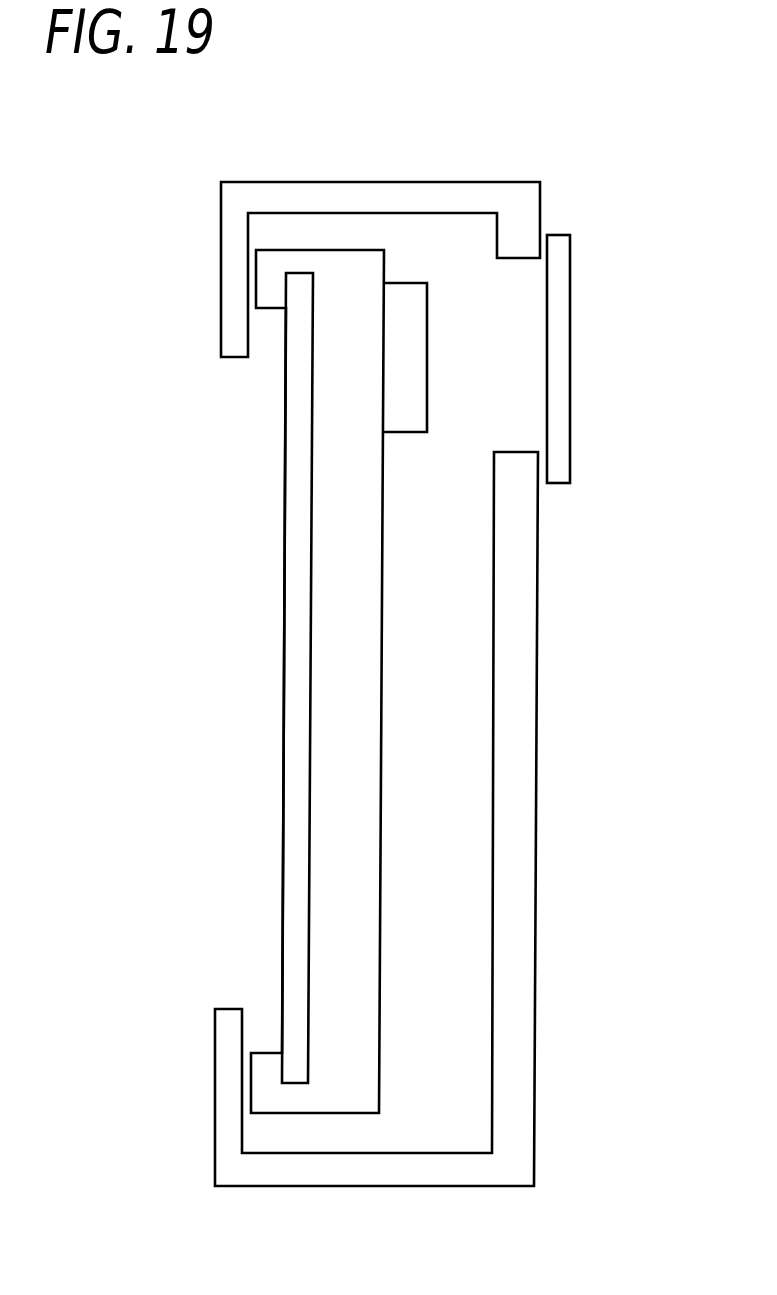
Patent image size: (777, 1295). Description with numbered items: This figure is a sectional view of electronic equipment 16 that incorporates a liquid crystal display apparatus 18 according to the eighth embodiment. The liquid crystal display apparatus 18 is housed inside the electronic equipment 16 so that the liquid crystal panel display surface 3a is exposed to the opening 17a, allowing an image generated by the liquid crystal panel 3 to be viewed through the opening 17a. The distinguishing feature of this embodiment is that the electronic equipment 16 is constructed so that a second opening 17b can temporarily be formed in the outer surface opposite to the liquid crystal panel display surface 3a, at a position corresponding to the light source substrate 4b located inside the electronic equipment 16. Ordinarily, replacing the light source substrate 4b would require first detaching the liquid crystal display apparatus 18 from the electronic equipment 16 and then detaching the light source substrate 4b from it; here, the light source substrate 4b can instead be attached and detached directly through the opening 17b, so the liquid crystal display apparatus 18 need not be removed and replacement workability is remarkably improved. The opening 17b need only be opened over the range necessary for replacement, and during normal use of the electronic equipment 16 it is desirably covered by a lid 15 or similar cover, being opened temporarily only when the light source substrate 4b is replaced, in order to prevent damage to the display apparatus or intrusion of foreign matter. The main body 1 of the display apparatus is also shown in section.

The semiconductor element / body 1 is at (342, 990).
The liquid crystal panel 3 is at (300, 470).
The liquid crystal panel display surface 3a is at (272, 686).
The light source substrate 4b is at (417, 348).
The lid 15 is at (560, 430).
The electronic equipment 16 is at (515, 196).
The opening 17a is at (276, 623).
The opening 17b is at (522, 357).
The liquid crystal display apparatus 18 is at (276, 875).